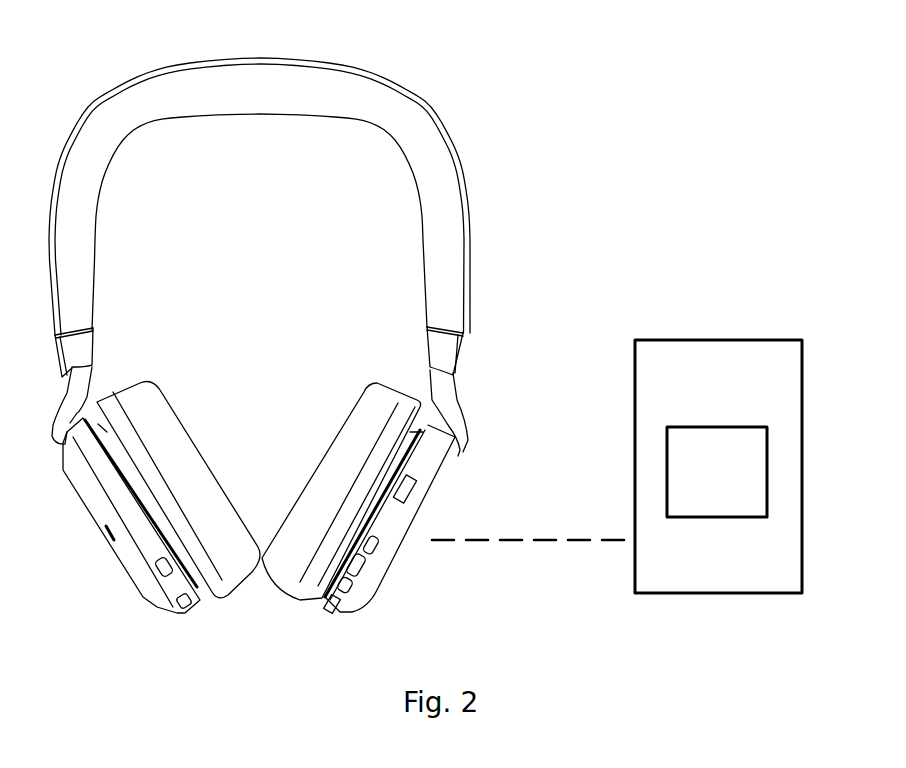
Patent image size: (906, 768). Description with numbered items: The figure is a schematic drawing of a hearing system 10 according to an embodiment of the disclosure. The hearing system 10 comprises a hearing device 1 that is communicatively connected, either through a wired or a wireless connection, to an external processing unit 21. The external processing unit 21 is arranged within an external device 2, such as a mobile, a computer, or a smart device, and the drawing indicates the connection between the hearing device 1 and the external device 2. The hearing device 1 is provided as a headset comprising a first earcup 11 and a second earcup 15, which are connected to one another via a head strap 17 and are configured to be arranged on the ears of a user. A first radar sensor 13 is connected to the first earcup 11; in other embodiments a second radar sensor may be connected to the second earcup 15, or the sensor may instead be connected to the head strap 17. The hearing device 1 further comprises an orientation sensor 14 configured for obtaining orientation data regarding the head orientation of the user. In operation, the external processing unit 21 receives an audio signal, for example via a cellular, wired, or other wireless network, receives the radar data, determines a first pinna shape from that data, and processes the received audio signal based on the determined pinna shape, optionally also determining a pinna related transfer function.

The hearing system 10 is at (605, 169).
The hearing device 1 is at (492, 178).
The external device 2 is at (706, 313).
The external processing unit 21 is at (701, 485).
The first earcup 11 is at (458, 458).
The first radar sensor 13 is at (320, 601).
The orientation sensor 14 is at (402, 503).
The second earcup 15 is at (112, 542).
The head strap 17 is at (112, 108).